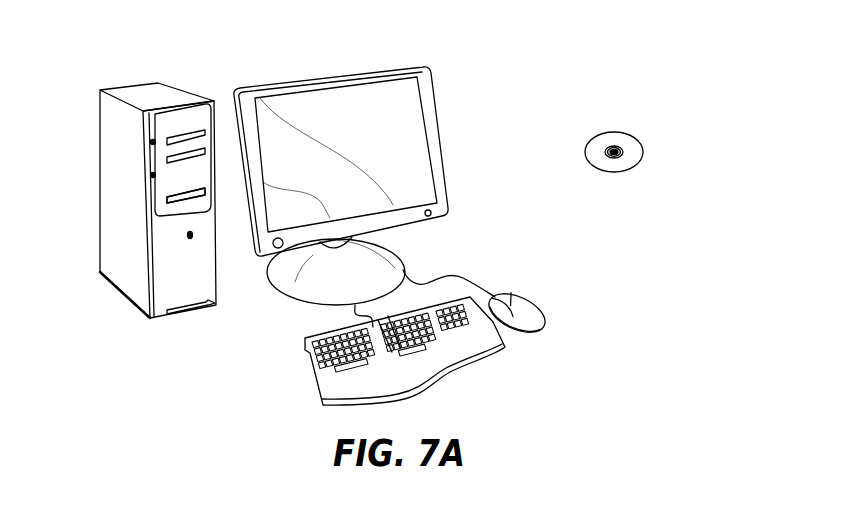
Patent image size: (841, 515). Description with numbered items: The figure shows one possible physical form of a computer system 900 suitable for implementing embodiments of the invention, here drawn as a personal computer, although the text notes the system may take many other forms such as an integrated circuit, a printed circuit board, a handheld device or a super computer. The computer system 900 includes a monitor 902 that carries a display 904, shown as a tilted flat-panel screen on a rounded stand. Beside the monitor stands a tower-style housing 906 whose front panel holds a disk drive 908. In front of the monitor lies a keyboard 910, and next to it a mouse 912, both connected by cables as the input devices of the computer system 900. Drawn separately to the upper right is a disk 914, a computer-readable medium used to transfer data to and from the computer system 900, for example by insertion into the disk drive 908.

The computer system 900 is at (545, 53).
The monitor 902 is at (443, 158).
The display 904 is at (402, 102).
The housing 906 is at (145, 91).
The disk drive 908 is at (205, 198).
The keyboard 910 is at (309, 373).
The mouse 912 is at (536, 301).
The disk 914 is at (630, 132).